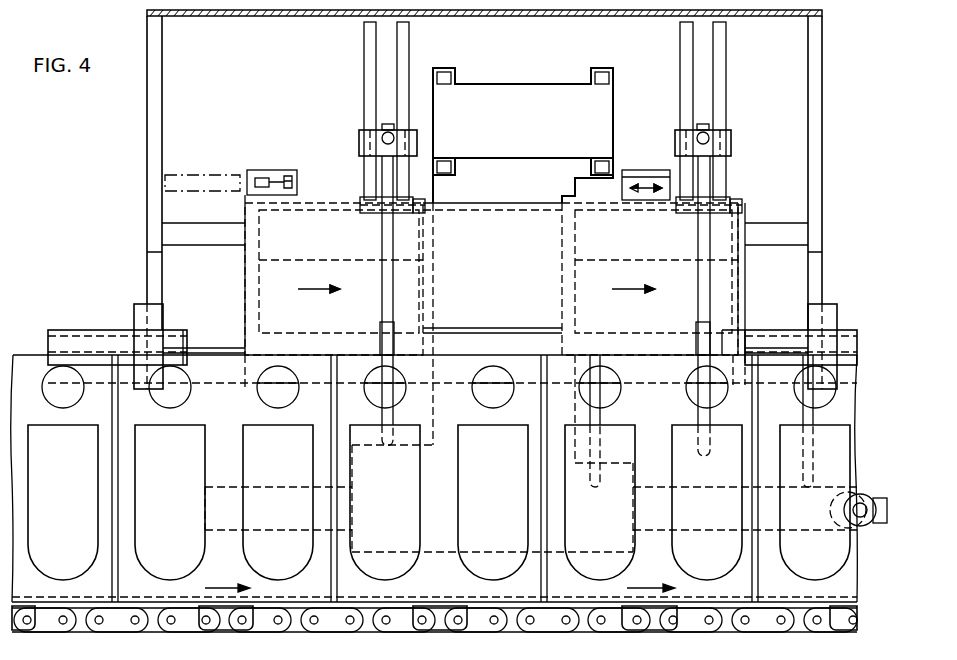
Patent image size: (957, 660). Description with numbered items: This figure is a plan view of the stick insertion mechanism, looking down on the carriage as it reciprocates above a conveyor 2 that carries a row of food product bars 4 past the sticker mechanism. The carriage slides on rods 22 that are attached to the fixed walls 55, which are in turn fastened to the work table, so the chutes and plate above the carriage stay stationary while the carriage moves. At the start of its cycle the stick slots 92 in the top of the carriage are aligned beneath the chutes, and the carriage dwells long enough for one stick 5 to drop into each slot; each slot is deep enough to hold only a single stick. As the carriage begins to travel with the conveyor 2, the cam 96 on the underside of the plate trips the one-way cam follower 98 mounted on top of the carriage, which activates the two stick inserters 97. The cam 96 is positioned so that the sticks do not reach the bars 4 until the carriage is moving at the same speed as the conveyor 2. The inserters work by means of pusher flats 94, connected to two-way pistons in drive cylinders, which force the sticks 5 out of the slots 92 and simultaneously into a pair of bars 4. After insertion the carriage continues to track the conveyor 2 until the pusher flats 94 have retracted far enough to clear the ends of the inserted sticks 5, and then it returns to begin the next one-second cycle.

The conveyor 2 is at (743, 587).
The food product bar 4 is at (177, 560).
The stick 5 is at (394, 407).
The rod 22 is at (186, 246).
The wall 55 is at (147, 160).
The stick slot 92 is at (380, 318).
The pusher flat 94 is at (387, 250).
The cam 96 is at (205, 172).
The stick inserter 97 is at (364, 184).
The one-way cam follower 98 is at (270, 170).